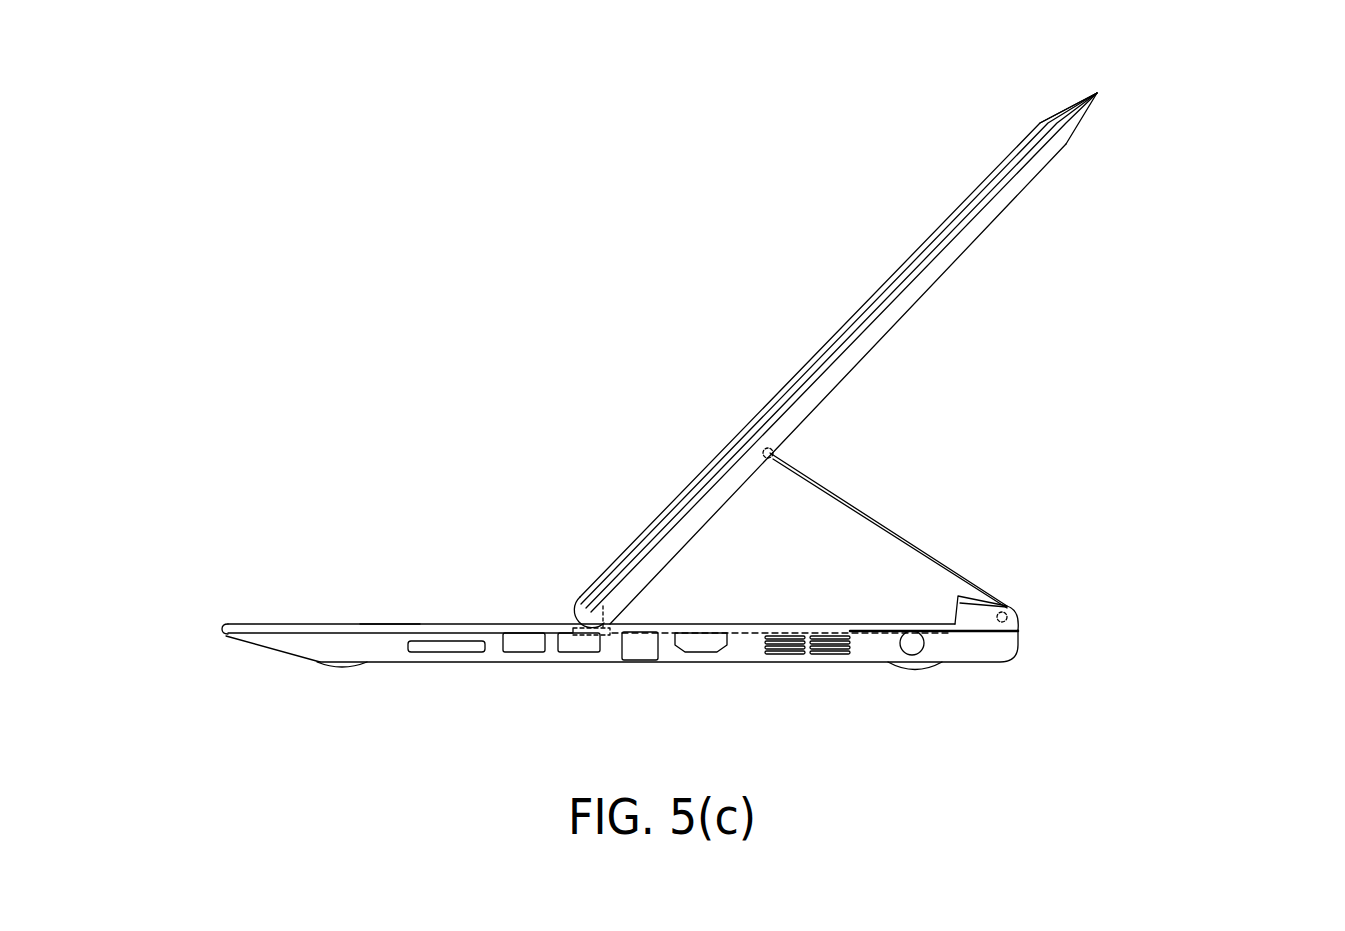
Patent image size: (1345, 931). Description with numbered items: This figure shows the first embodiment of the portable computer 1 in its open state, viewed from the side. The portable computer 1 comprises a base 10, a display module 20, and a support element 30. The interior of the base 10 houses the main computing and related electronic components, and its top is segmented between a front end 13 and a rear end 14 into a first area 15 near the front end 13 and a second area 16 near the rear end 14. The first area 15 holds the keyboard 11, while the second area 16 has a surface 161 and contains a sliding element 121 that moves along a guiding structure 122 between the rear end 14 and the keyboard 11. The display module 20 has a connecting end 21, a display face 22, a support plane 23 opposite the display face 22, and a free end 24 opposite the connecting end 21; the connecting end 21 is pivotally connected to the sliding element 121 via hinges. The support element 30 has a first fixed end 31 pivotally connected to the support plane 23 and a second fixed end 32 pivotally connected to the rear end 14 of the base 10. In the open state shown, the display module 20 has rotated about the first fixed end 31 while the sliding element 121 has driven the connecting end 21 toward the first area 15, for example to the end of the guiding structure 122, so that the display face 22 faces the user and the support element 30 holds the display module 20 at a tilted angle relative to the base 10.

The portable computer 1 is at (1265, 100).
The base 10 is at (268, 660).
The keyboard 11 is at (428, 624).
The front end 13 is at (222, 630).
The rear end 14 is at (1012, 642).
The first area 15 is at (388, 600).
The second area 16 is at (819, 598).
The sliding element 121 is at (595, 636).
The guiding structure 122 is at (733, 636).
The surface 161 is at (748, 624).
The display module 20 is at (1115, 72).
The connecting end 21 is at (580, 600).
The display face 22 is at (940, 226).
The support plane 23 is at (895, 328).
The free end 24 is at (1075, 95).
The support element 30 is at (915, 508).
The first fixed end 31 is at (776, 452).
The second fixed end 32 is at (1005, 608).